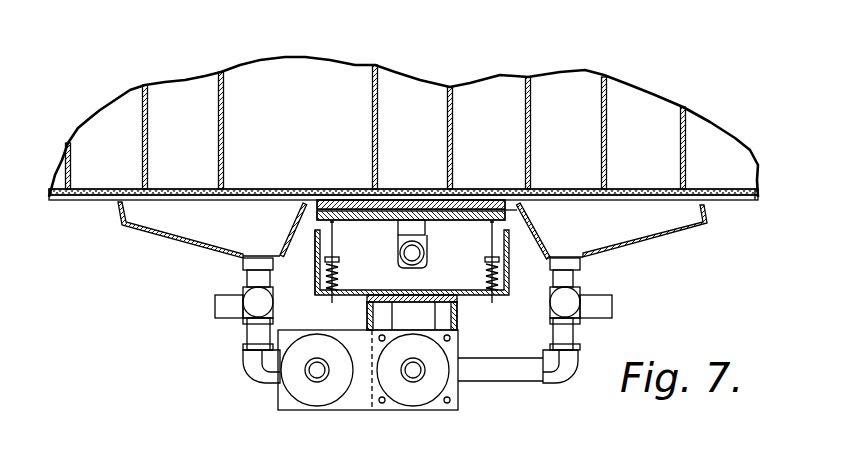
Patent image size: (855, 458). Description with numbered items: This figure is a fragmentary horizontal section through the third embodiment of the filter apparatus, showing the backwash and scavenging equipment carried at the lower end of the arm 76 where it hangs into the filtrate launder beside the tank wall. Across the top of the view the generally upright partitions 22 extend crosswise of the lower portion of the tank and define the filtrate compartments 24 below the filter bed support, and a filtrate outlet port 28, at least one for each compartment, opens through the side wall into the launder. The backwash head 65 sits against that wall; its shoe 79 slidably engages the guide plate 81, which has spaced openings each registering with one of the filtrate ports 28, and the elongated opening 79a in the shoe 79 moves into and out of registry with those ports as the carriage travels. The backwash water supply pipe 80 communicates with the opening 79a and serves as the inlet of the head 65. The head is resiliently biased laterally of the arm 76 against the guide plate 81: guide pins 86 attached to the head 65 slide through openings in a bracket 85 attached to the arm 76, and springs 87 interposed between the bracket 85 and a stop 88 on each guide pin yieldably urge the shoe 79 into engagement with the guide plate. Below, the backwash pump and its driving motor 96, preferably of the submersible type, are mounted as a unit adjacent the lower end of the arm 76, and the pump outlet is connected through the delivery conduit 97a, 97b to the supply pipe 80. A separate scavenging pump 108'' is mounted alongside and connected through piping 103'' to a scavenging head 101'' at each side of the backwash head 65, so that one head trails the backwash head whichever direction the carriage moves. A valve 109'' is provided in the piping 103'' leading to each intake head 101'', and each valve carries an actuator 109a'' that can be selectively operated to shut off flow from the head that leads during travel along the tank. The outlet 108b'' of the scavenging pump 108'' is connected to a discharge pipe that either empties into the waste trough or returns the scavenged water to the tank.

The partitions 22 is at (226, 78).
The filtrate compartments 24 is at (337, 85).
The filtrate outlet ports 28 is at (93, 190).
The backwash head 65 is at (508, 213).
The arm 76 is at (465, 310).
The shoe 79 is at (477, 222).
The elongated opening 79a is at (373, 207).
The backwash water supply pipe 80 is at (398, 232).
The guide plate 81 is at (745, 205).
The bracket 85 is at (322, 262).
The guide pins 86 is at (336, 237).
The springs 87 is at (336, 285).
The stop 88 is at (320, 257).
The motor 96 is at (420, 412).
The delivery conduit 97a is at (425, 382).
The delivery conduit 97b is at (415, 262).
The scavenging head 101'' is at (419, 250).
The piping 103'' is at (389, 371).
The scavenging pump 108'' is at (316, 392).
The outlet 108b'' is at (267, 393).
The valve 109'' is at (442, 318).
The actuator 109a'' is at (412, 308).